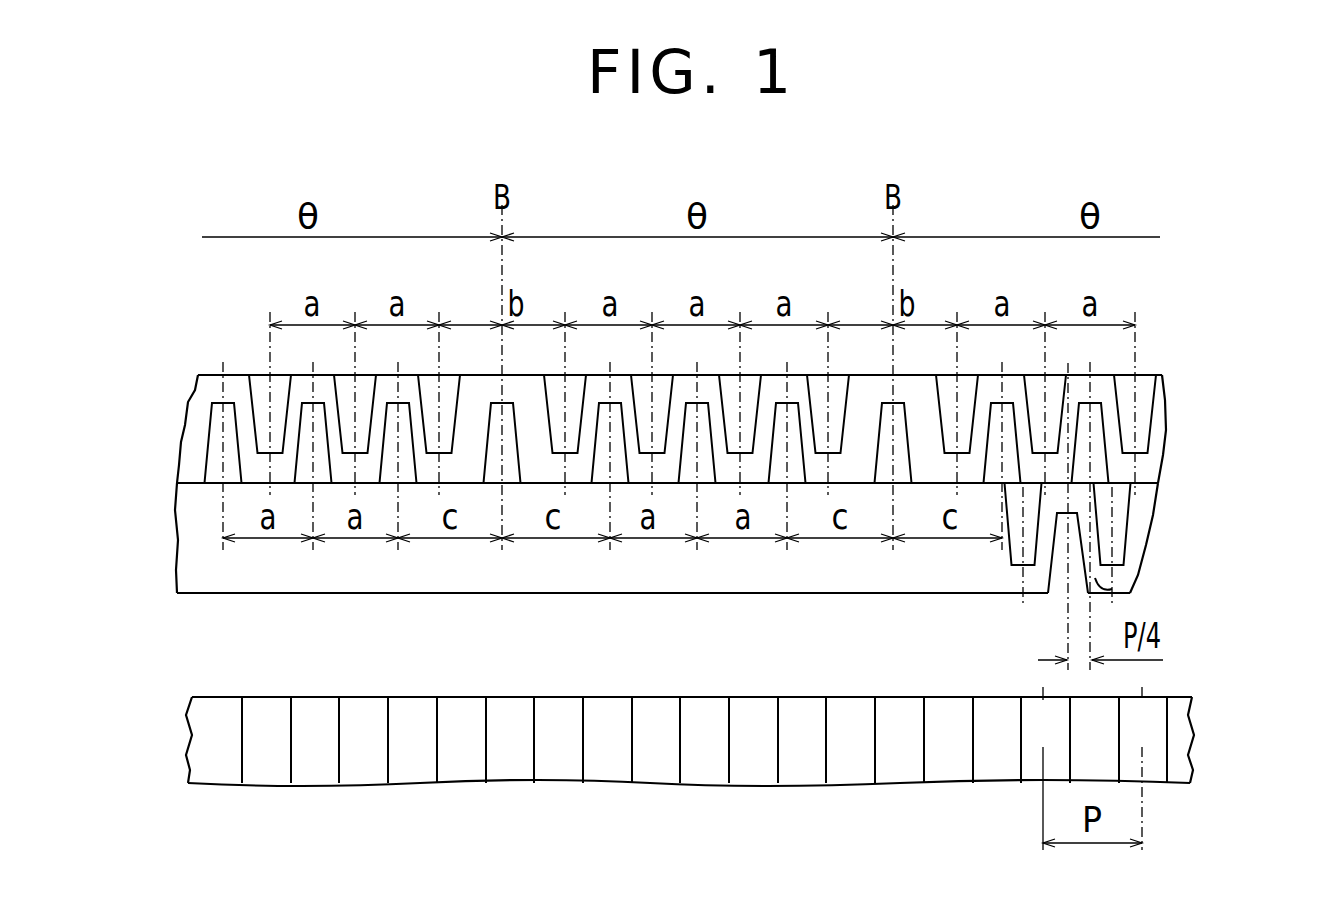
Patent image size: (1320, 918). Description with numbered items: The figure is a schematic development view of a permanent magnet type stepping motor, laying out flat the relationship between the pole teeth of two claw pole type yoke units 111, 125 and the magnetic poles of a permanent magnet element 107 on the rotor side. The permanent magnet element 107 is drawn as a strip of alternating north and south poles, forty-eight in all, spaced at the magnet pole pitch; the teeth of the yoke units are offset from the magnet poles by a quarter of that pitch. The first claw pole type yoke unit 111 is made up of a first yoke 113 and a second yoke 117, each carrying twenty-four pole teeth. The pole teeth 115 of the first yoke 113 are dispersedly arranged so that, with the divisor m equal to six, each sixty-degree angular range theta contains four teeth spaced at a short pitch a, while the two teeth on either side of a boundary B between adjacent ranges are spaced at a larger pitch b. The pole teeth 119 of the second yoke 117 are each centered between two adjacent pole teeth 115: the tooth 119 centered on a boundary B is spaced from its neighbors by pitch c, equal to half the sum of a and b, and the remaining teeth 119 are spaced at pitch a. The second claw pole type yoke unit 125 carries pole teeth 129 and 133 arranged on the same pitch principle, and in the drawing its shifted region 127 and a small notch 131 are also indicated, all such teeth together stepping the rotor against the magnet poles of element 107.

The permanent magnet element 107 is at (1195, 757).
The claw pole type yoke unit 111 is at (1181, 428).
The first yoke 113 is at (1155, 361).
The pole teeth 115 is at (347, 383).
The second yoke 117 is at (1131, 476).
The pole teeth 119 is at (307, 467).
The claw pole type yoke unit 125 is at (1163, 547).
The slot portion 127 is at (1153, 501).
The pole teeth 129 is at (1117, 527).
The notch 131 is at (1105, 588).
The pole teeth 133 is at (1062, 575).